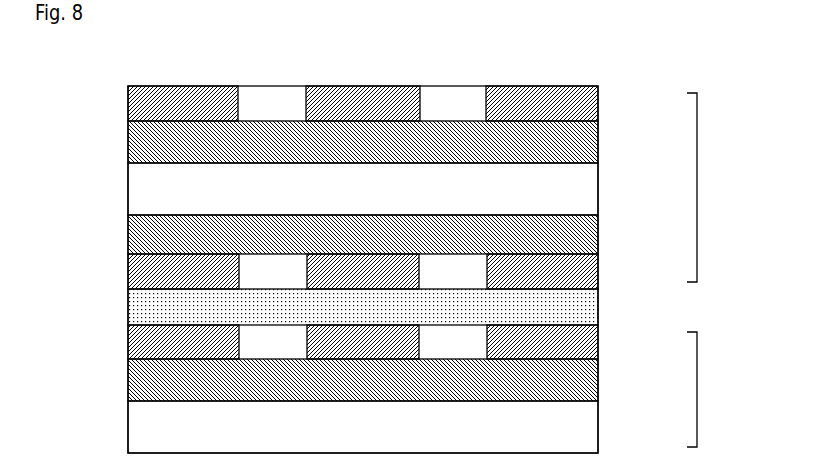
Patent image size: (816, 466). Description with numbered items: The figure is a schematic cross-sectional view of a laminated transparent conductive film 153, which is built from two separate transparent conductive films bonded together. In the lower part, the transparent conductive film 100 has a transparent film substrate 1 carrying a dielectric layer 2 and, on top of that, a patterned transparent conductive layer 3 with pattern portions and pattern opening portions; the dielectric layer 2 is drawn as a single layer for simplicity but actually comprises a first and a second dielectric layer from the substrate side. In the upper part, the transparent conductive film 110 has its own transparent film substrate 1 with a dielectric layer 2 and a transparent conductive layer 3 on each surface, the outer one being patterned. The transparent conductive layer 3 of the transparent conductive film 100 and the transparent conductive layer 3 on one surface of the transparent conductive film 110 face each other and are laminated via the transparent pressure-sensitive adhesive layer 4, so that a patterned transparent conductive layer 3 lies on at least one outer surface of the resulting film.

The transparent film substrate 1 is at (587, 180).
The dielectric layer 2 is at (590, 138).
The transparent conductive layer 3 is at (590, 100).
The transparent pressure-sensitive adhesive layer 4 is at (590, 306).
The transparent conductive film 100 is at (697, 390).
The transparent conductive film 110 is at (697, 188).
The transparent conductive film 153 is at (589, 71).